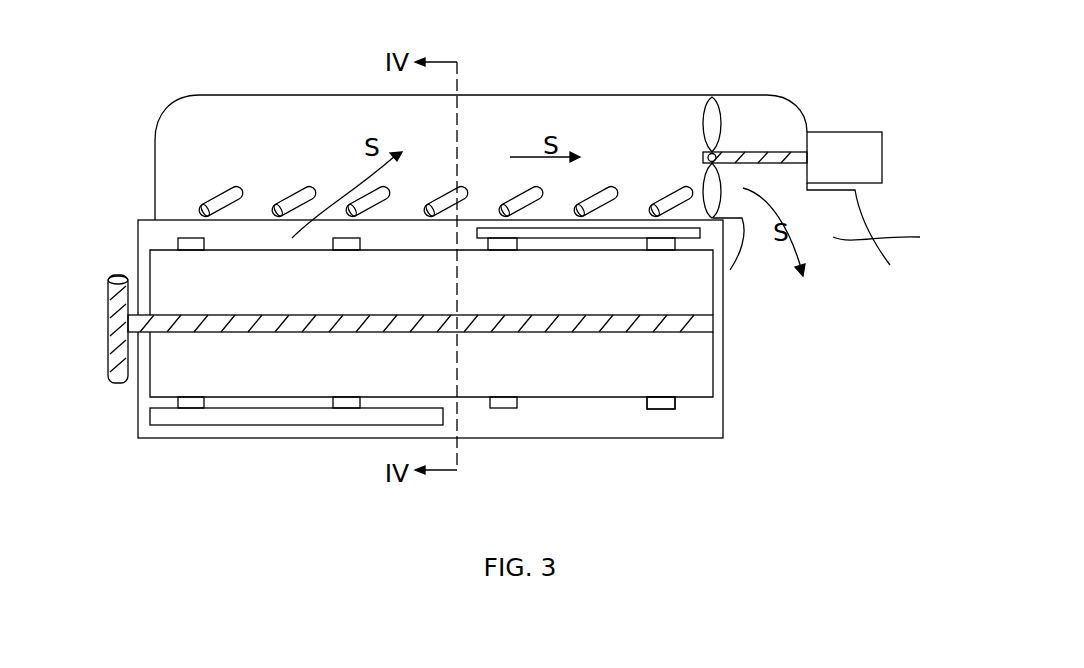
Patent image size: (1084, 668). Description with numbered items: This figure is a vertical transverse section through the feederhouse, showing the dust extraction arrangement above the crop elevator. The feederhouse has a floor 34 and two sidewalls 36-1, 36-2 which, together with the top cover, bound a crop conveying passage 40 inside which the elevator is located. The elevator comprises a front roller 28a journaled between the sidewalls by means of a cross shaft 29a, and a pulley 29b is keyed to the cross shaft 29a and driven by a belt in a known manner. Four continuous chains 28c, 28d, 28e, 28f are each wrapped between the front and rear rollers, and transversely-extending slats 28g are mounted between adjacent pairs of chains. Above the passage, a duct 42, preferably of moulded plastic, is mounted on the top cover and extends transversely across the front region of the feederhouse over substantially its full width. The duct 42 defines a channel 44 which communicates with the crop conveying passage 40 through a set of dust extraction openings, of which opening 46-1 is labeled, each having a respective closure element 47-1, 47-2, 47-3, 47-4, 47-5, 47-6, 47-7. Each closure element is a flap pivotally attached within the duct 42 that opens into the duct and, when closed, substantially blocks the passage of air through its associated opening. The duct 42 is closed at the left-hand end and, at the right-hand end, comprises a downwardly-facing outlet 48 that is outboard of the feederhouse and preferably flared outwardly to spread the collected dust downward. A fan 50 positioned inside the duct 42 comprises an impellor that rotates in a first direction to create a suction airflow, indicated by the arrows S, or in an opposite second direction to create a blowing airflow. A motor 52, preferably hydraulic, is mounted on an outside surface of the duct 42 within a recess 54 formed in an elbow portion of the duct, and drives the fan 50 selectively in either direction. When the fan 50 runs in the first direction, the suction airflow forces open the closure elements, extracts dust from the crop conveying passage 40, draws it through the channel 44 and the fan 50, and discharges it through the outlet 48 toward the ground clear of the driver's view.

The floor 34 is at (238, 440).
The sidewall 36-1 is at (138, 240).
The sidewall 36-2 is at (723, 365).
The cross shaft 29a is at (713, 325).
The pulley 29b is at (108, 370).
The front roller 28a is at (636, 400).
The continuous chain 28c is at (185, 240).
The continuous chain 28d is at (348, 405).
The continuous chain 28e is at (503, 410).
The continuous chain 28f is at (680, 405).
The slat 28g is at (191, 418).
The crop conveying passage 40 is at (620, 425).
The duct 42 is at (655, 95).
The channel 44 is at (545, 118).
The dust extraction opening 46-1 is at (243, 213).
The closure element 47-1 is at (215, 200).
The closure element 47-2 is at (298, 200).
The closure element 47-3 is at (380, 207).
The closure element 47-4 is at (440, 197).
The closure element 47-5 is at (530, 207).
The closure element 47-6 is at (603, 200).
The closure element 47-7 is at (672, 193).
The outlet 48 is at (893, 238).
The fan 50 is at (720, 115).
The motor 52 is at (882, 157).
The recess 54 is at (847, 129).